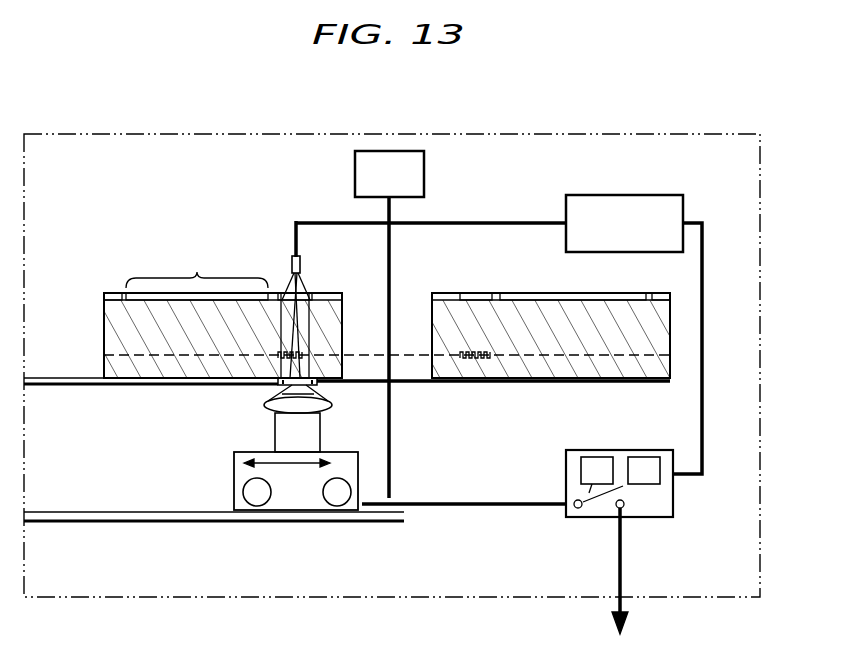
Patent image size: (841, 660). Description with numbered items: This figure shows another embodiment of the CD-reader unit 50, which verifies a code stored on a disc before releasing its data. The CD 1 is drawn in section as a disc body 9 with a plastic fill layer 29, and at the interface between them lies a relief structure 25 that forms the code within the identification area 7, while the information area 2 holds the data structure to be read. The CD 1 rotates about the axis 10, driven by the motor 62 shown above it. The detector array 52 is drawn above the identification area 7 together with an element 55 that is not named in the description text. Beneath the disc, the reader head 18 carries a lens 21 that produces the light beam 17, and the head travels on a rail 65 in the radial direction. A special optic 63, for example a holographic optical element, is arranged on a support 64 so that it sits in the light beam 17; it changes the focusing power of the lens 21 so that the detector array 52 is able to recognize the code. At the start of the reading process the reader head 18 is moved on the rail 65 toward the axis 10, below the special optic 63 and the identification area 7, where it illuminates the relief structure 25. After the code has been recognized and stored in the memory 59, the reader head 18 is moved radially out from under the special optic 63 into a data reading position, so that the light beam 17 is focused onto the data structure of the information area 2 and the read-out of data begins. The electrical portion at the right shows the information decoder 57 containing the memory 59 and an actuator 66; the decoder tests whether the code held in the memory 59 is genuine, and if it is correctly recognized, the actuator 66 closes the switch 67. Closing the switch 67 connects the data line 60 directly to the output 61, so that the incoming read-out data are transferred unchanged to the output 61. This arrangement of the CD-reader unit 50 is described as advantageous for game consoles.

The CD-reader unit 50 is at (113, 204).
The CD 1 is at (104, 336).
The information area 2 is at (197, 261).
The identification area 7 is at (290, 292).
The disc body 9 is at (115, 316).
The axis 10 is at (393, 212).
The light beam 17 is at (320, 432).
The reader head 18 is at (234, 490).
The lens 21 is at (268, 410).
The relief structure 25 is at (305, 334).
The plastic fill layer 29 is at (104, 368).
The detector array 52 is at (300, 260).
The light beam 55 is at (300, 288).
The information decoder 57 is at (676, 492).
The memory 59 is at (641, 456).
The data line 60 is at (480, 507).
The output 61 is at (622, 538).
The motor 62 is at (355, 178).
The special optic 63 is at (278, 386).
The support 64 is at (92, 388).
The rail 65 is at (370, 523).
The actuator 66 is at (594, 456).
The switch 67 is at (575, 513).